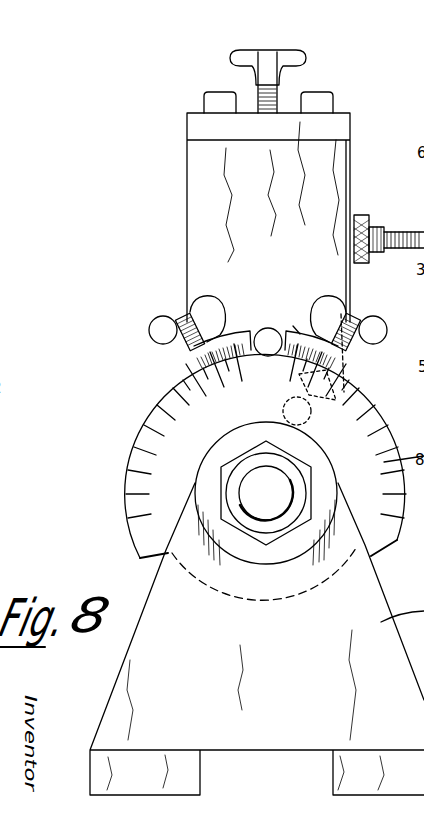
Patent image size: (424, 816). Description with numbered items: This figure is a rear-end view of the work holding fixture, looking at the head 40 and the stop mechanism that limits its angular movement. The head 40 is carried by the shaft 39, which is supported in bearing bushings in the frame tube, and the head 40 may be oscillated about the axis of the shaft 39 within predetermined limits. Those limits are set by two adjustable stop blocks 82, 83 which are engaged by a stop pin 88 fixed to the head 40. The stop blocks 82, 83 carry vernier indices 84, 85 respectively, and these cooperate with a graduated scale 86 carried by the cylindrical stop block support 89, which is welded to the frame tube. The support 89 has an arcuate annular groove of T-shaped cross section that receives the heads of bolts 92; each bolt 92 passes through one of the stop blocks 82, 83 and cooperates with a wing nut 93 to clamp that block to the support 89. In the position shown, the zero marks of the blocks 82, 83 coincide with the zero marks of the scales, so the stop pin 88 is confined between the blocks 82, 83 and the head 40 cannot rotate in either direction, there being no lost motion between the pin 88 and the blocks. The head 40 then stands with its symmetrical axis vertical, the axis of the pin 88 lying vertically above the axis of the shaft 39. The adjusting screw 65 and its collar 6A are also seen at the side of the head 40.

The head 40 is at (215, 181).
The adjusting screw 65 is at (420, 223).
The screw collar 6A is at (370, 256).
The graduated scale 86 is at (142, 428).
The stop block support 89 is at (140, 516).
The shaft 39 is at (266, 497).
The stop block 82 is at (170, 372).
The stop block 83 is at (370, 377).
The vernier index 85 is at (293, 326).
The bolt 92 is at (309, 397).
The stop pin 88 is at (262, 329).
The vernier index 84 is at (183, 317).
The wing nut 93 is at (378, 326).